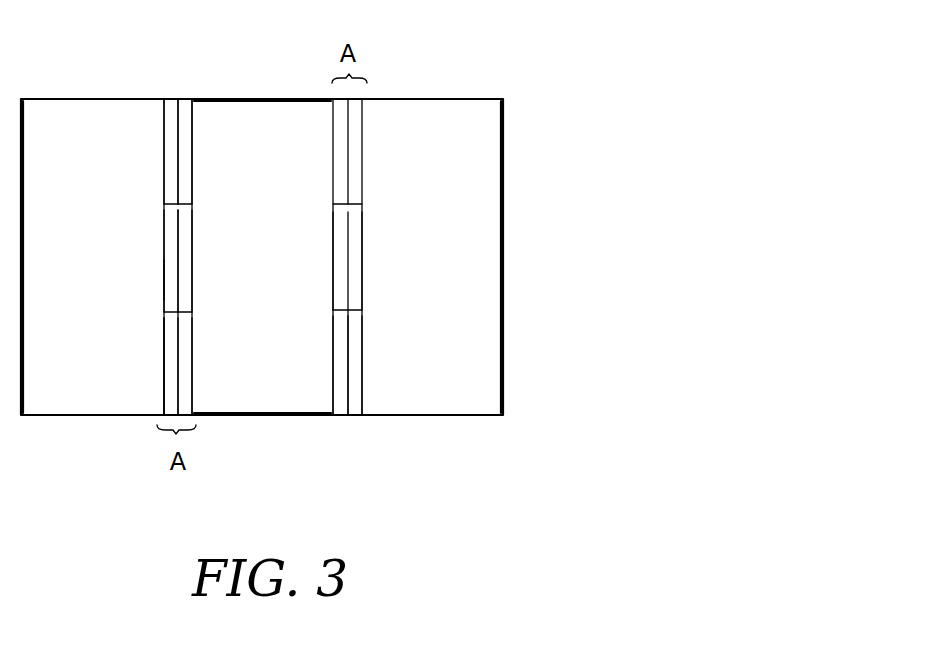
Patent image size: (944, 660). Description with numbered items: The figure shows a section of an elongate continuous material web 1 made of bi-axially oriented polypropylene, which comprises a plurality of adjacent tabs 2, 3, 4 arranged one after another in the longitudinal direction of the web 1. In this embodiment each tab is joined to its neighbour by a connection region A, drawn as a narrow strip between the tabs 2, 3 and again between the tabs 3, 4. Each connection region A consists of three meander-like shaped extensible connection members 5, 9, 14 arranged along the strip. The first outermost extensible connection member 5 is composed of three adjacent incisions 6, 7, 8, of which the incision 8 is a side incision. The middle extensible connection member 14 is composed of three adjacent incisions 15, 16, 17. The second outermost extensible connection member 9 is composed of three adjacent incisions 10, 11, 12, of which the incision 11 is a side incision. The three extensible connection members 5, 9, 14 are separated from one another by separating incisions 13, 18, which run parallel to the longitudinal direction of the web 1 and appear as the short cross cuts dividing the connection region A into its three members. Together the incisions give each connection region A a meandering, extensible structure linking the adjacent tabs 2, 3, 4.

The elongate continuous material web 1 is at (508, 100).
The tab 2 is at (87, 271).
The tab 3 is at (256, 271).
The tab 4 is at (426, 271).
The extensible connection member 5 is at (172, 128).
The incision 6 is at (158, 133).
The incision 7 is at (193, 143).
The side incision 8 is at (181, 116).
The extensible connection member 9 is at (170, 387).
The incision 10 is at (163, 392).
The side incision 11 is at (178, 395).
The incision 12 is at (195, 371).
The separating incision 13 is at (172, 203).
The extensible connection member 14 is at (172, 278).
The incision 15 is at (172, 272).
The incision 16 is at (193, 253).
The incision 17 is at (178, 267).
The separating incision 18 is at (185, 313).